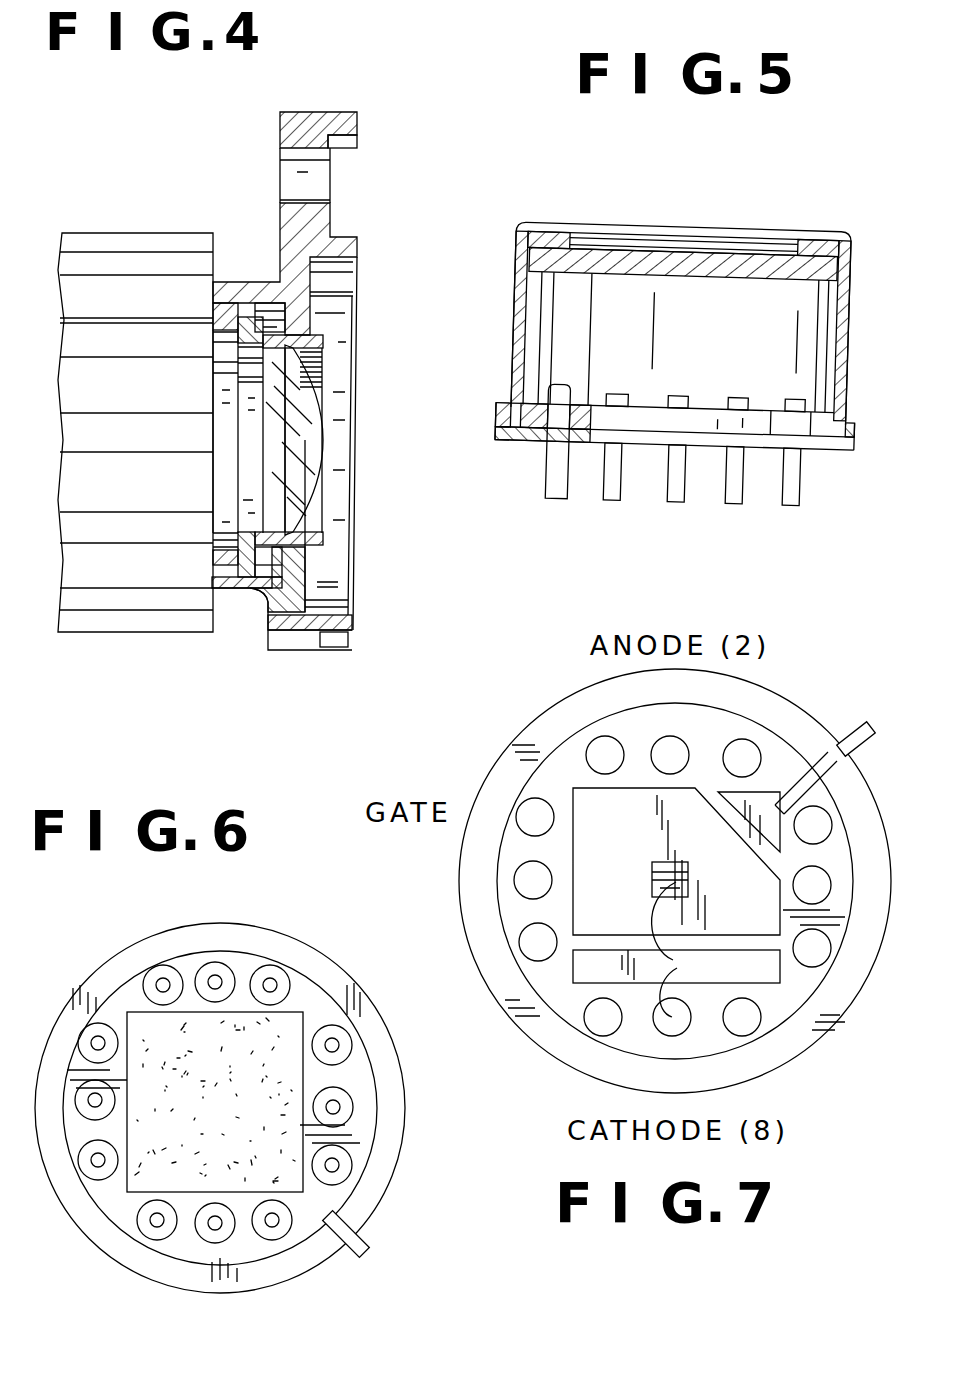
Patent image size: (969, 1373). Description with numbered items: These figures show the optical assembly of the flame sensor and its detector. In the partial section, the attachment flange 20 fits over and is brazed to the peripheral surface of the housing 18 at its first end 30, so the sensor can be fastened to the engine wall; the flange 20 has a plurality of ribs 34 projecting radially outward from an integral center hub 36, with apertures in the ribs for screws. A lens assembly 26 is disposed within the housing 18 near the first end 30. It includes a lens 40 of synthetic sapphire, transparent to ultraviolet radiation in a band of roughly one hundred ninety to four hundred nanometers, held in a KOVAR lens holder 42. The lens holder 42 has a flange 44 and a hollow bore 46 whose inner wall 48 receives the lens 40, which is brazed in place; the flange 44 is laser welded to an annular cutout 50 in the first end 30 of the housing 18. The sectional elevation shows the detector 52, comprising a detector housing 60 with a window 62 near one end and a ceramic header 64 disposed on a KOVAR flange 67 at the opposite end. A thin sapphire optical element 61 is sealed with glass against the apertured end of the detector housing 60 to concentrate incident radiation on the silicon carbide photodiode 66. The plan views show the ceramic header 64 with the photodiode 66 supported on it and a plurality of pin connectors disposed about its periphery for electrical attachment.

In FIG. 4, the housing 18 is at (153, 227).
In FIG. 4, the attachment flange 20 is at (317, 338).
In FIG. 4, the lens assembly 26 is at (317, 381).
In FIG. 4, the first end 30 is at (248, 623).
In FIG. 4, the ribs 34 is at (320, 655).
In FIG. 4, the center hub 36 is at (236, 280).
In FIG. 4, the lens 40 is at (302, 448).
In FIG. 4, the lens holder 42 is at (318, 517).
In FIG. 4, the flange 44 is at (262, 590).
In FIG. 4, the hollow bore 46 is at (310, 503).
In FIG. 4, the inner wall 48 is at (323, 367).
In FIG. 4, the annular cutout 50 is at (203, 557).
In FIG. 5, the detector 52 is at (691, 331).
In FIG. 5, the detector housing 60 is at (706, 326).
In FIG. 5, the high temperature optical element 61 is at (697, 250).
In FIG. 5, the window 62 is at (640, 173).
In FIG. 5, the ceramic header 64 is at (530, 440).
In FIG. 6, the ceramic header 64 is at (215, 958).
In FIG. 7, the ceramic header 64 is at (552, 745).
In FIG. 7, the photodiode 66 is at (637, 837).
In FIG. 5, the KOVAR flange 67 is at (877, 443).
In FIG. 6, the KOVAR flange 67 is at (322, 980).
In FIG. 7, the KOVAR flange 67 is at (505, 783).